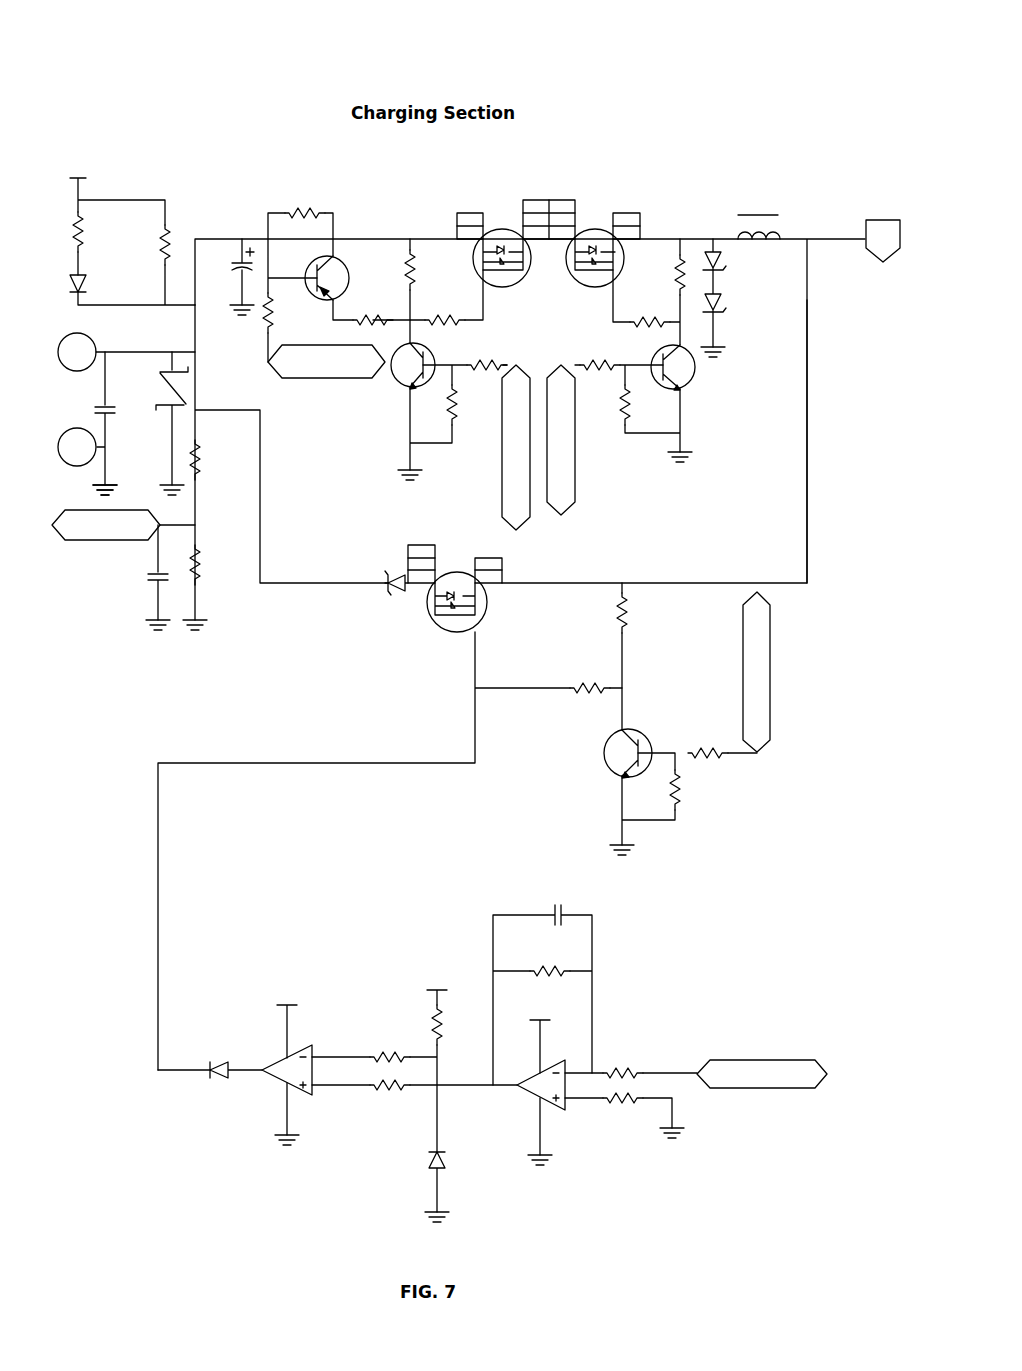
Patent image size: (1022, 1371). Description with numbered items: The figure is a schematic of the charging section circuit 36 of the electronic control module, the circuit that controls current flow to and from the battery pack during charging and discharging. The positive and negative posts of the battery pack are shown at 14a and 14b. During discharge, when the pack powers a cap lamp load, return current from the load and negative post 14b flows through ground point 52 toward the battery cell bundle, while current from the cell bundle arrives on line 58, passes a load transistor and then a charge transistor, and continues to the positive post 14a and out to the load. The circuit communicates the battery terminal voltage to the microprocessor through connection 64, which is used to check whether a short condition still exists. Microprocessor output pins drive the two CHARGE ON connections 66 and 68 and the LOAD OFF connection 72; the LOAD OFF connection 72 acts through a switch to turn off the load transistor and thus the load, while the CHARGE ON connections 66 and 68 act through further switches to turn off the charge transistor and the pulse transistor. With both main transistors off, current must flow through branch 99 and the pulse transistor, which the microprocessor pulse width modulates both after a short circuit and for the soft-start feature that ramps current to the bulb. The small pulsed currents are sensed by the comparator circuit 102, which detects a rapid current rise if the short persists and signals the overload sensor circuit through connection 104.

The charging section circuit 36 is at (124, 40).
The positive terminal of the battery pack 14a is at (70, 336).
The negative terminal of the battery pack 14b is at (70, 430).
The ground point 52 is at (108, 484).
The line 58 is at (835, 238).
The connection 64 is at (98, 545).
The connection (CHARGE ON) 66 is at (502, 482).
The connection (CHARGE ON) 68 is at (770, 706).
The connection (LOAD OFF) 72 is at (575, 493).
The line (branch) 99 is at (807, 510).
The comparator circuit 102 is at (757, 986).
The connection 104 is at (765, 1090).